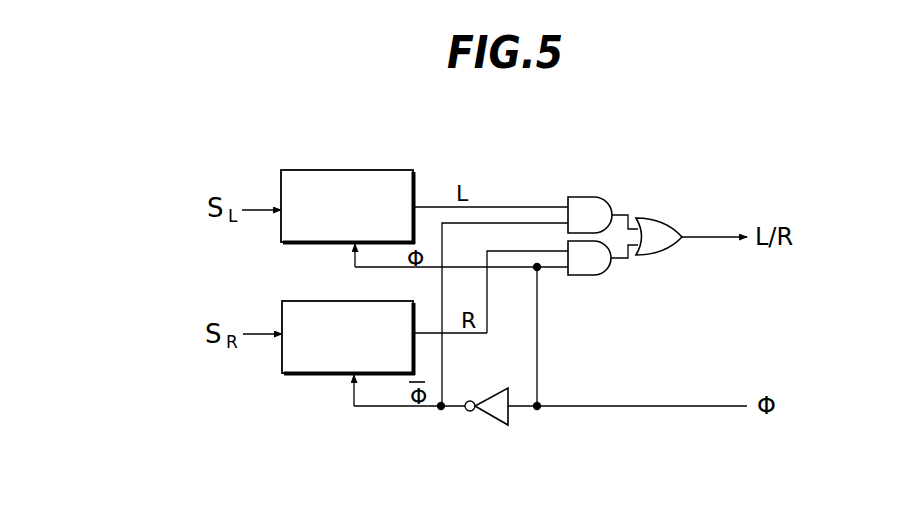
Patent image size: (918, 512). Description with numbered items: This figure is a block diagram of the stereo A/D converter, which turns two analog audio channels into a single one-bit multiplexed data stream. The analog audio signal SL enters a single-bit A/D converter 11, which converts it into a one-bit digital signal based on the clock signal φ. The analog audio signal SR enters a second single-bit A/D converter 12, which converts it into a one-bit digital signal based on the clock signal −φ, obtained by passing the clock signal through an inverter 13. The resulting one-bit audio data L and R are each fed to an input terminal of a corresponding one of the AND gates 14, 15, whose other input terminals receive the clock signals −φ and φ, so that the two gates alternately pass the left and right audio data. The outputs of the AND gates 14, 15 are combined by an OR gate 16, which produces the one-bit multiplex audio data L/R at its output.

The single-bit A/D converter 11 is at (355, 170).
The single-bit A/D converter 12 is at (320, 375).
The inverter 13 is at (494, 421).
The AND gate 14 is at (587, 197).
The AND gate 15 is at (592, 277).
The OR gate 16 is at (667, 218).